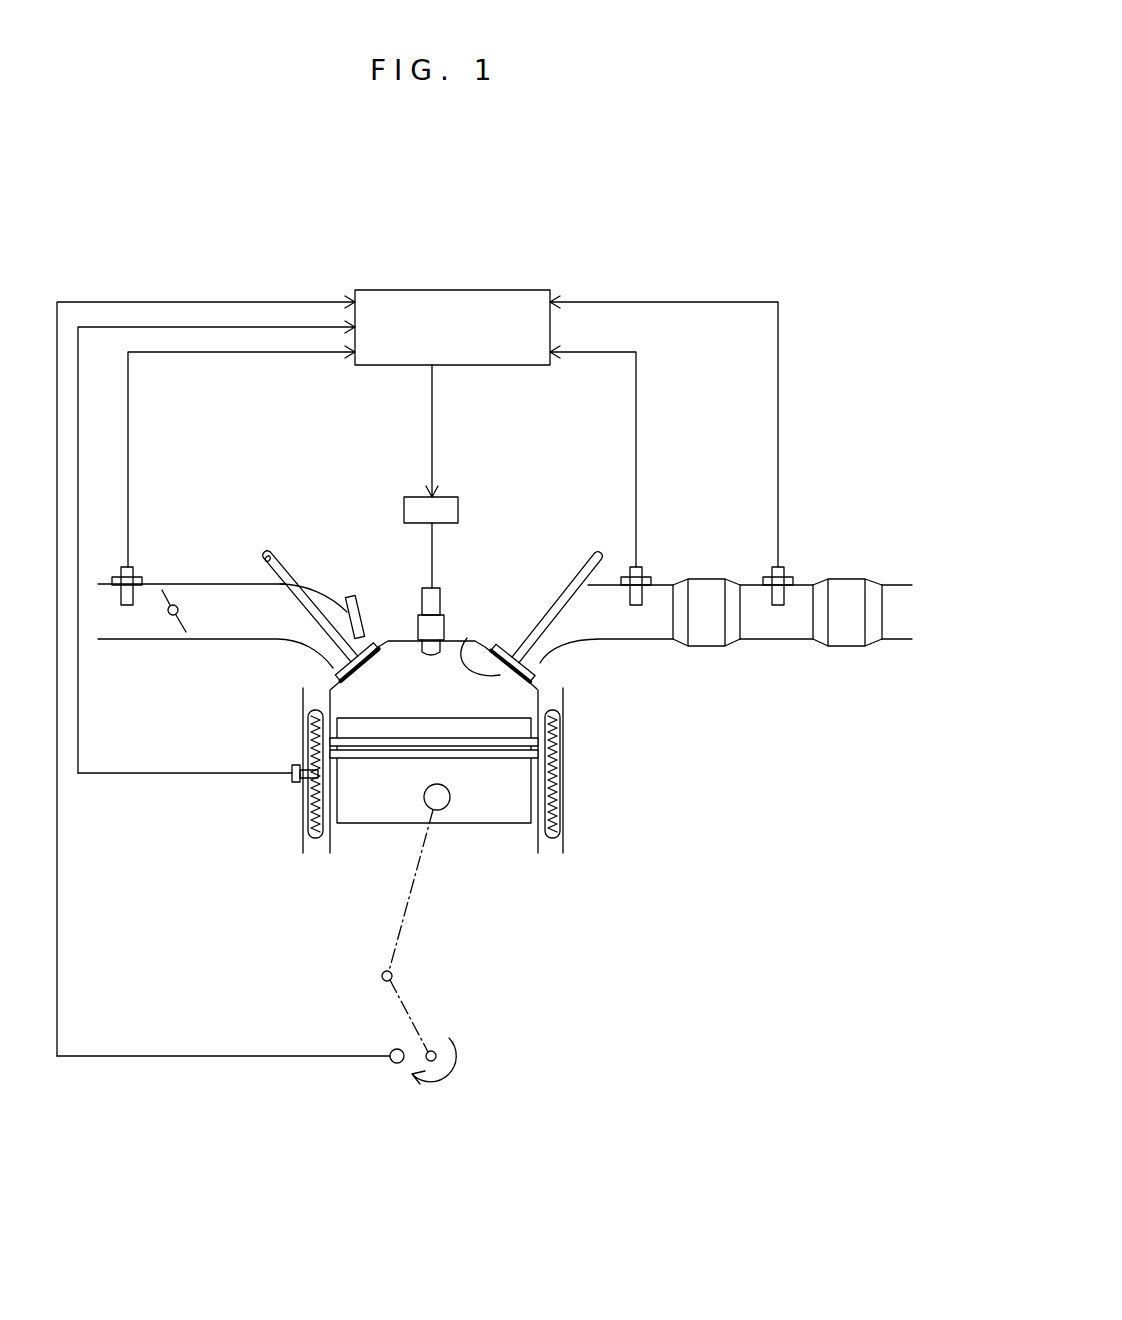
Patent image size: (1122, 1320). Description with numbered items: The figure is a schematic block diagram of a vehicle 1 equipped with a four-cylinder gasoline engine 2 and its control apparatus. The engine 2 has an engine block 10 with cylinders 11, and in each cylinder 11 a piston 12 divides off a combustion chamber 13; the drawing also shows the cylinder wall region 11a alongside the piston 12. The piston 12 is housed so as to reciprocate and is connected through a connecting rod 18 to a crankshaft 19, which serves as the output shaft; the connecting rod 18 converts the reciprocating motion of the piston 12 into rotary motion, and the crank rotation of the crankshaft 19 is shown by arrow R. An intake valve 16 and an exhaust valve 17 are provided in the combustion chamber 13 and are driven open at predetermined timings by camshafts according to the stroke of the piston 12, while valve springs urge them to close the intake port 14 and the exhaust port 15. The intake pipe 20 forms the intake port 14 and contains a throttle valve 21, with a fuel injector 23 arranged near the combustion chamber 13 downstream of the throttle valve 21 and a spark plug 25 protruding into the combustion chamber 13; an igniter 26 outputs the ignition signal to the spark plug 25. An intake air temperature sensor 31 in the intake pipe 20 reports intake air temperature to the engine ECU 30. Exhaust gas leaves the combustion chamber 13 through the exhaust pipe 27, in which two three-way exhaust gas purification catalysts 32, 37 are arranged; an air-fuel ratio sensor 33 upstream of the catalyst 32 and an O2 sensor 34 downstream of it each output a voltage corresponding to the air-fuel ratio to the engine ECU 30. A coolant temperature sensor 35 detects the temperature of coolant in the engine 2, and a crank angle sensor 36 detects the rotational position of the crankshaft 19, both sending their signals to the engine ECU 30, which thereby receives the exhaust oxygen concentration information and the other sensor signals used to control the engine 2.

The vehicle 1 is at (632, 249).
The engine 2 is at (620, 972).
The engine block 10 is at (569, 826).
The cylinder 11 is at (538, 853).
The cylinder wall 11a is at (308, 828).
The piston 12 is at (470, 825).
The combustion chamber 13 is at (455, 712).
The intake port 14 is at (322, 652).
The exhaust port 15 is at (556, 650).
The intake valve 16 is at (392, 640).
The exhaust valve 17 is at (467, 638).
The connecting rod 18 is at (395, 998).
The crankshaft 19 is at (432, 1047).
The intake pipe 20 is at (217, 571).
The throttle valve 21 is at (178, 625).
The fuel injector 23 is at (369, 595).
The spark plug 25 is at (447, 617).
The igniter 26 is at (447, 495).
The exhaust pipe 27 is at (616, 650).
The engine ECU 30 is at (527, 365).
The intake air temperature sensor 31 is at (137, 568).
The exhaust gas purification catalyst 32 is at (703, 648).
The air-fuel ratio sensor 33 is at (647, 575).
The O2 sensor 34 is at (768, 575).
The coolant temperature sensor 35 is at (292, 766).
The crank angle sensor 36 is at (393, 1063).
The exhaust gas purification catalyst 37 is at (842, 648).
The crank rotation arrow R is at (457, 1052).